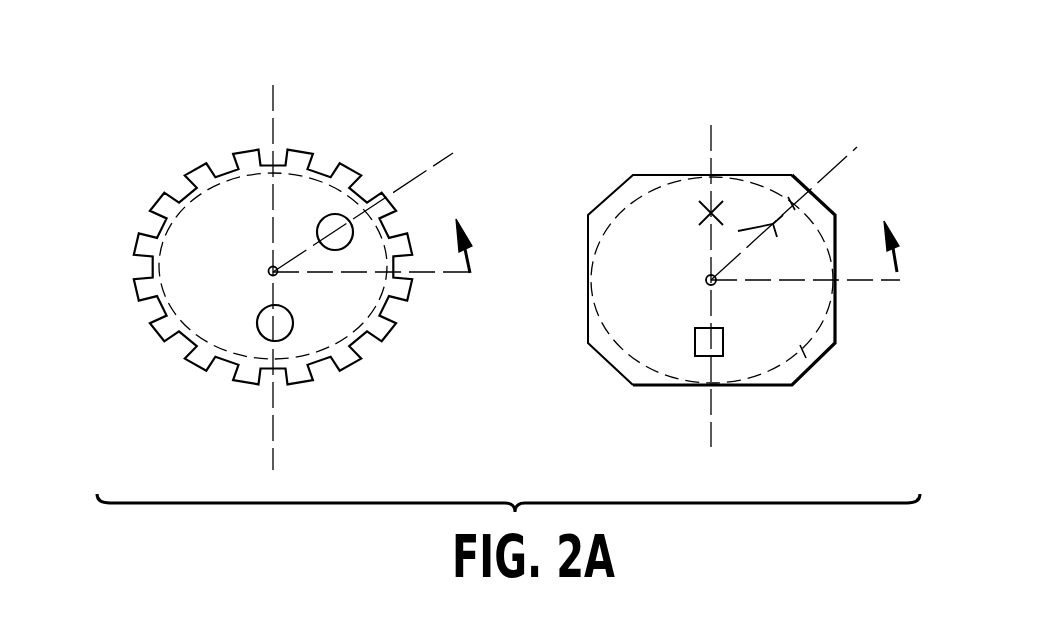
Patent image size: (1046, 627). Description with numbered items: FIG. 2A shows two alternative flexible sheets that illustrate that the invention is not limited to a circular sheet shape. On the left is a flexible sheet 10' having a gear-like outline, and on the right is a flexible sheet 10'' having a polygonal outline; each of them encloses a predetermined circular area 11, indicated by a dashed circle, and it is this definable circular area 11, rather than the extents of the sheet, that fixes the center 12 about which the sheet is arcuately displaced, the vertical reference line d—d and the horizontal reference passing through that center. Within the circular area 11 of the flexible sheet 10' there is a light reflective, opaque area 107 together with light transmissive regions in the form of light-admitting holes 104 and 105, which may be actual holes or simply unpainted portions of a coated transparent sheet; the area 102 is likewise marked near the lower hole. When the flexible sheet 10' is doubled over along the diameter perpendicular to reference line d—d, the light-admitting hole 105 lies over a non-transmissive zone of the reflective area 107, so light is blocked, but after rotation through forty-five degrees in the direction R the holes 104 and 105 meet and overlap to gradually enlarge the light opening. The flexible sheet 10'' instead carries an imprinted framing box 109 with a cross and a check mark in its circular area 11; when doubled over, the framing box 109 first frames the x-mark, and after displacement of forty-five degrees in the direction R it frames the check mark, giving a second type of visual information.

The flexible sheet 10' is at (384, 256).
The flexible sheet 10'' is at (756, 259).
The circular area 11 is at (337, 352).
The center / axis of rotation 12 is at (268, 263).
The hole 102 is at (258, 320).
The light-admitting hole 104 is at (332, 212).
The light-admitting hole 105 is at (282, 323).
The light reflective area 107 is at (192, 275).
The framing box 109 is at (694, 345).